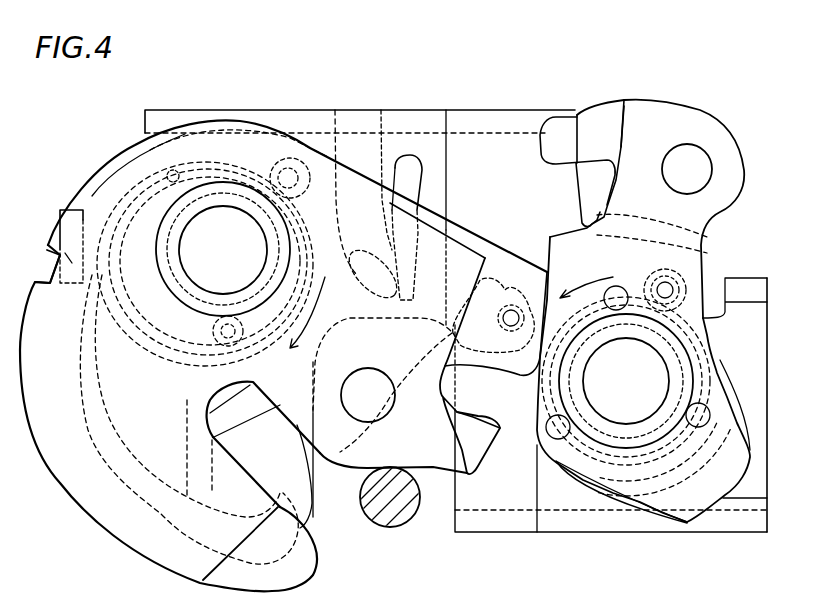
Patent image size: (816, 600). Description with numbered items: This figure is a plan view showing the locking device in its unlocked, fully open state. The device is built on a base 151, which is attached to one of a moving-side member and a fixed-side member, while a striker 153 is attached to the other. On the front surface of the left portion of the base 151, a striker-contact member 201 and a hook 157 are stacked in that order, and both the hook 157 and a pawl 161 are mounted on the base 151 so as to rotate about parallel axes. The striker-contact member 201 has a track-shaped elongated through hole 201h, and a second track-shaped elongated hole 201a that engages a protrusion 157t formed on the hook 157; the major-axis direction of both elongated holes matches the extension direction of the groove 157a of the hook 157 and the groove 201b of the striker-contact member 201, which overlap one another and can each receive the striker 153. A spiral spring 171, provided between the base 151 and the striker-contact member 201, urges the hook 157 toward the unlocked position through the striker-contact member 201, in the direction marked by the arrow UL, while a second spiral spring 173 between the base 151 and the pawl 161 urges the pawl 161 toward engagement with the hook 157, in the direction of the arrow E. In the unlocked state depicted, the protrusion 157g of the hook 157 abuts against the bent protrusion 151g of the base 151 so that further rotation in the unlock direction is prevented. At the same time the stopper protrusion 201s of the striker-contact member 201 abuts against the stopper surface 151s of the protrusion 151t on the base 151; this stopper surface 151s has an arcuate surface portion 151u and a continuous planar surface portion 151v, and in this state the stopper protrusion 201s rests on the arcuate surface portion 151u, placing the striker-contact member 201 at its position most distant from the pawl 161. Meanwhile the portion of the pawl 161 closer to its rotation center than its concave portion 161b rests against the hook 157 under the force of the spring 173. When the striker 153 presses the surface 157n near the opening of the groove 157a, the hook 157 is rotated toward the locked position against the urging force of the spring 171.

The base 151 is at (597, 520).
The bent protrusion 151g is at (68, 205).
The stopper surface 151s is at (340, 47).
The protrusion 151t is at (415, 152).
The arcuate surface portion 151u is at (381, 110).
The planar surface portion 151v is at (392, 130).
The striker 153 is at (391, 518).
The hook 157 is at (103, 503).
The groove 157a is at (314, 497).
The protrusion 157g is at (53, 230).
The surface 157n is at (470, 476).
The protrusion 157t is at (520, 290).
The pawl 161 is at (689, 123).
The concave portion 161b is at (624, 106).
The spring 171 is at (132, 147).
The spring 173 is at (610, 497).
The striker-contact member 201 is at (153, 507).
The elongated hole 201a is at (511, 308).
The groove 201b is at (317, 523).
The elongated through hole 201h is at (175, 167).
The stopper protrusion 201s is at (335, 110).